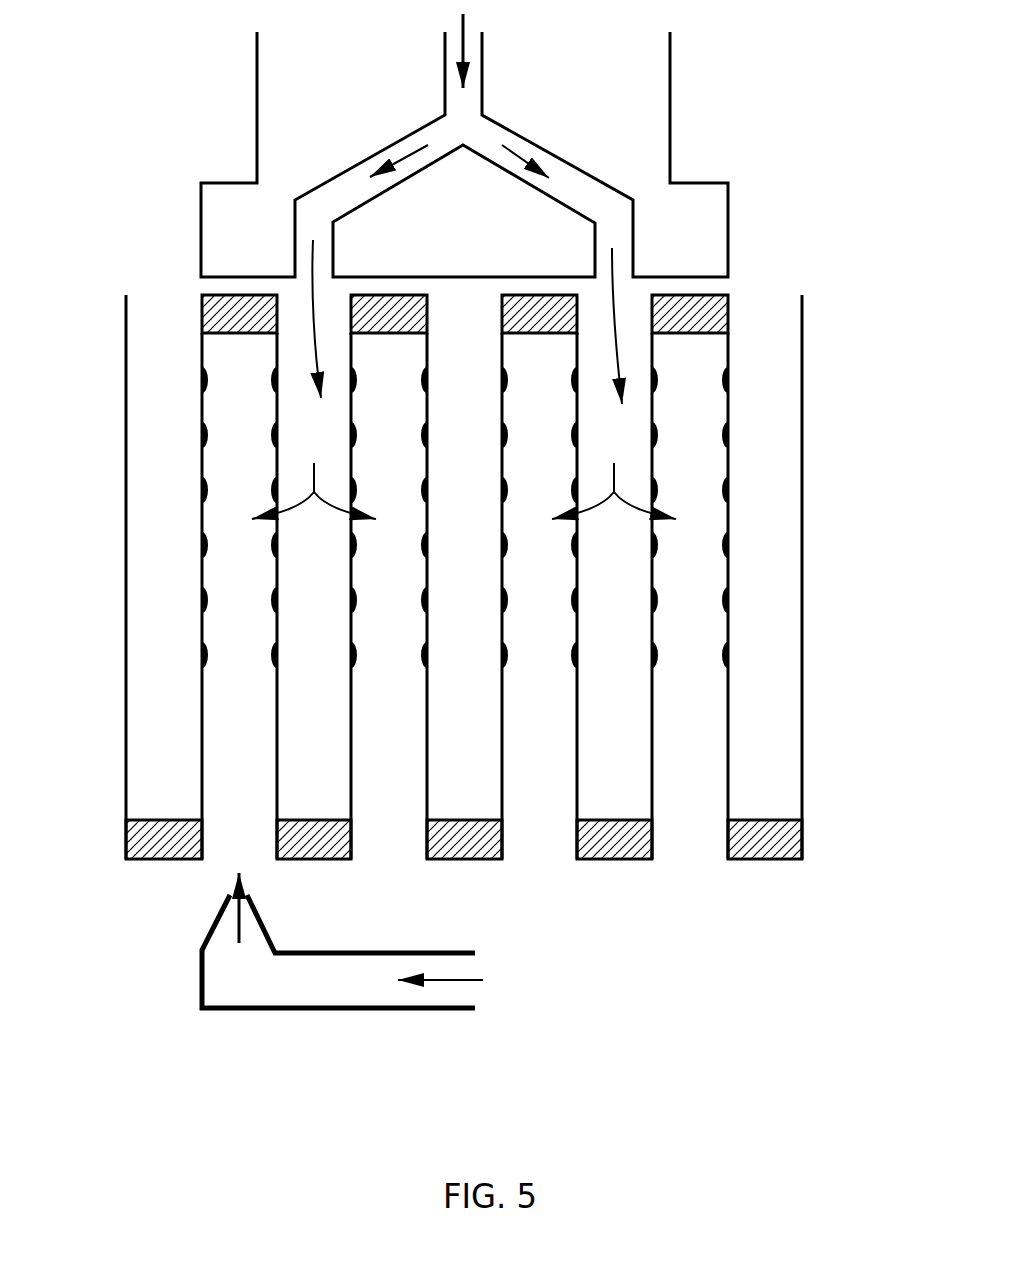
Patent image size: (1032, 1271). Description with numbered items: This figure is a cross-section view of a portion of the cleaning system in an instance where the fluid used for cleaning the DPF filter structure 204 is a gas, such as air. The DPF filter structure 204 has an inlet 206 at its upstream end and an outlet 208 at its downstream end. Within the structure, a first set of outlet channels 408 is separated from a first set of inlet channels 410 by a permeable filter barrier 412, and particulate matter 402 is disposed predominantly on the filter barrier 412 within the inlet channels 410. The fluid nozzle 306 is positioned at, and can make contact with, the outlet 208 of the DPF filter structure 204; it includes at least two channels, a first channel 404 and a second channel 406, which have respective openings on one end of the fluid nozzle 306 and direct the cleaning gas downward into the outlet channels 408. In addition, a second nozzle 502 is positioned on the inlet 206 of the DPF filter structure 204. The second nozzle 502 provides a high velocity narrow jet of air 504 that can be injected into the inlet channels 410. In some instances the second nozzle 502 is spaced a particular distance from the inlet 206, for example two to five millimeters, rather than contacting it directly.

The DPF filter structure 204 is at (815, 520).
The inlet 206 is at (740, 878).
The outlet 208 is at (765, 282).
The fluid nozzle 306 is at (670, 92).
The particulate matter 402 is at (200, 487).
The first channel 404 is at (590, 170).
The second channel 406 is at (340, 180).
The outlet channels 408 is at (293, 664).
The inlet channels 410 is at (259, 880).
The filter barrier 412 is at (273, 406).
The second nozzle 502 is at (198, 972).
The jet of air 504 is at (483, 979).